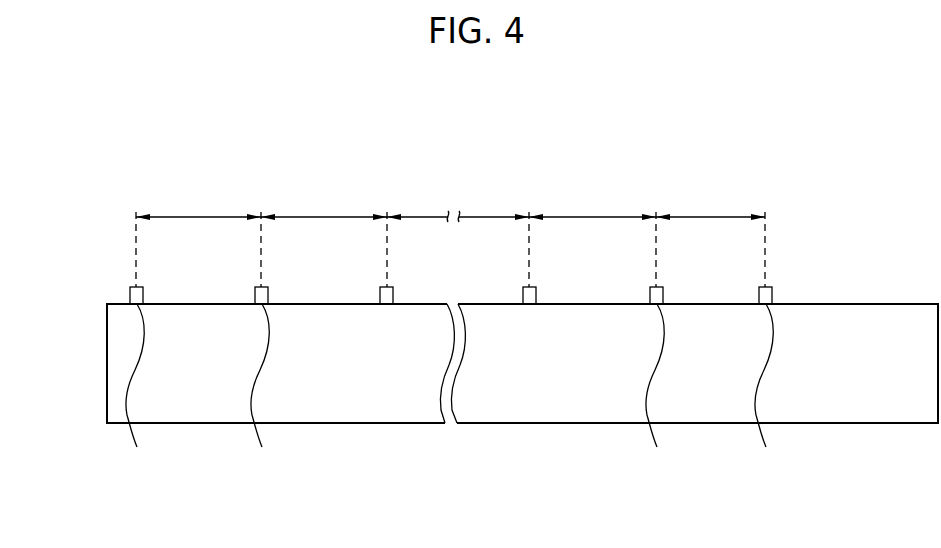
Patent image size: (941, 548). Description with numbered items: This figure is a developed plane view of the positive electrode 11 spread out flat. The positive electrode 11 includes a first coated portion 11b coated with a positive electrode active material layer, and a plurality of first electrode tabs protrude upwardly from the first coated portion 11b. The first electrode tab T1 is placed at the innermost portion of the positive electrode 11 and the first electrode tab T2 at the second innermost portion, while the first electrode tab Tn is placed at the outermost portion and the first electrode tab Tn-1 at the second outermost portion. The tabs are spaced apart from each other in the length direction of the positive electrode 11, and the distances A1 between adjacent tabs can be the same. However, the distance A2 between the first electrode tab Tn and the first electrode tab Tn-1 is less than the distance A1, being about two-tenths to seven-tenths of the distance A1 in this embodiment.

The positive electrode 11 is at (359, 444).
The first coated portion 11b is at (119, 361).
The first electrode tab T1 is at (139, 382).
The first electrode tab T2 is at (264, 382).
The first electrode tab Tn-1 is at (671, 382).
The first electrode tab Tn is at (769, 382).
The distance A1 is at (396, 206).
The distance A2 is at (710, 205).